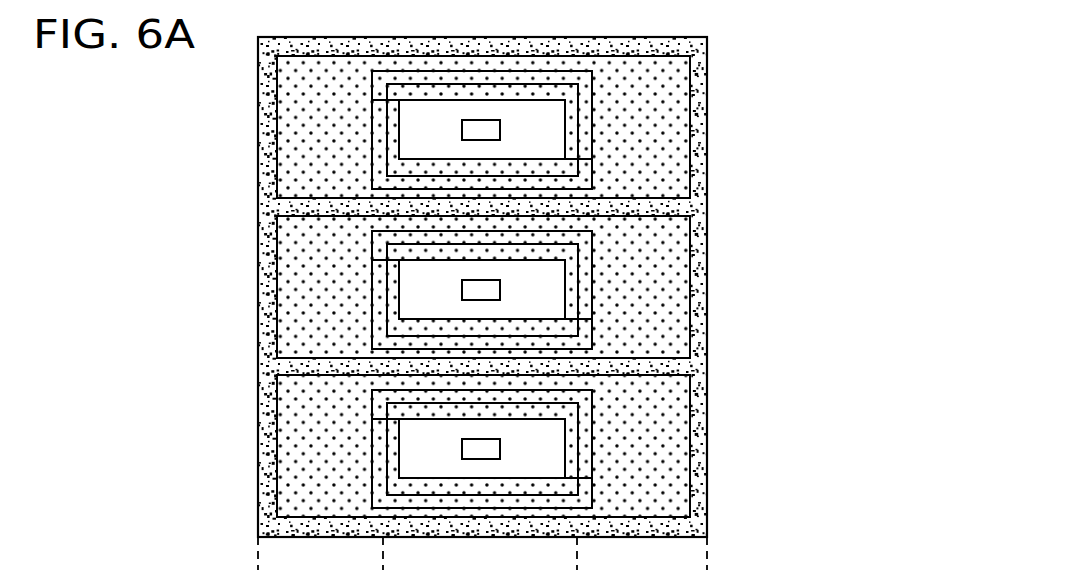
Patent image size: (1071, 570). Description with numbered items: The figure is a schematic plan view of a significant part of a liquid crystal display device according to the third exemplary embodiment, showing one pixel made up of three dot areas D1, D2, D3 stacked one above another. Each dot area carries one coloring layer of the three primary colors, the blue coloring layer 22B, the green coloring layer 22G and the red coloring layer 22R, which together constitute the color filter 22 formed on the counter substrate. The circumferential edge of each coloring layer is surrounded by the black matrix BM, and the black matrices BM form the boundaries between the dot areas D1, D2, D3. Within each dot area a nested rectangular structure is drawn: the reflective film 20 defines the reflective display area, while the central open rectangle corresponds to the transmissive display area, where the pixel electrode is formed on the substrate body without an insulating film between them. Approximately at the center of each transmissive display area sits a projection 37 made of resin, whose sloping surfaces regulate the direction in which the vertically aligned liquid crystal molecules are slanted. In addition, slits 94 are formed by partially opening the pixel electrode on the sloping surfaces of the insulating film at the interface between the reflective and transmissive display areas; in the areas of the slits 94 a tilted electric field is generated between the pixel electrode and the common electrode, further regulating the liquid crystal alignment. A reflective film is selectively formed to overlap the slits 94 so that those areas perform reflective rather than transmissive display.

The reflective film 20 is at (672, 243).
The color filter 22 is at (700, 66).
The blue coloring layer 22B is at (672, 148).
The green coloring layer 22G is at (672, 318).
The red coloring layer 22R is at (672, 493).
The projection 37 is at (498, 442).
The slit 94 is at (583, 445).
The black matrix BM is at (270, 398).
The first dot area D1 is at (297, 158).
The second dot area D2 is at (283, 322).
The third dot area D3 is at (293, 477).